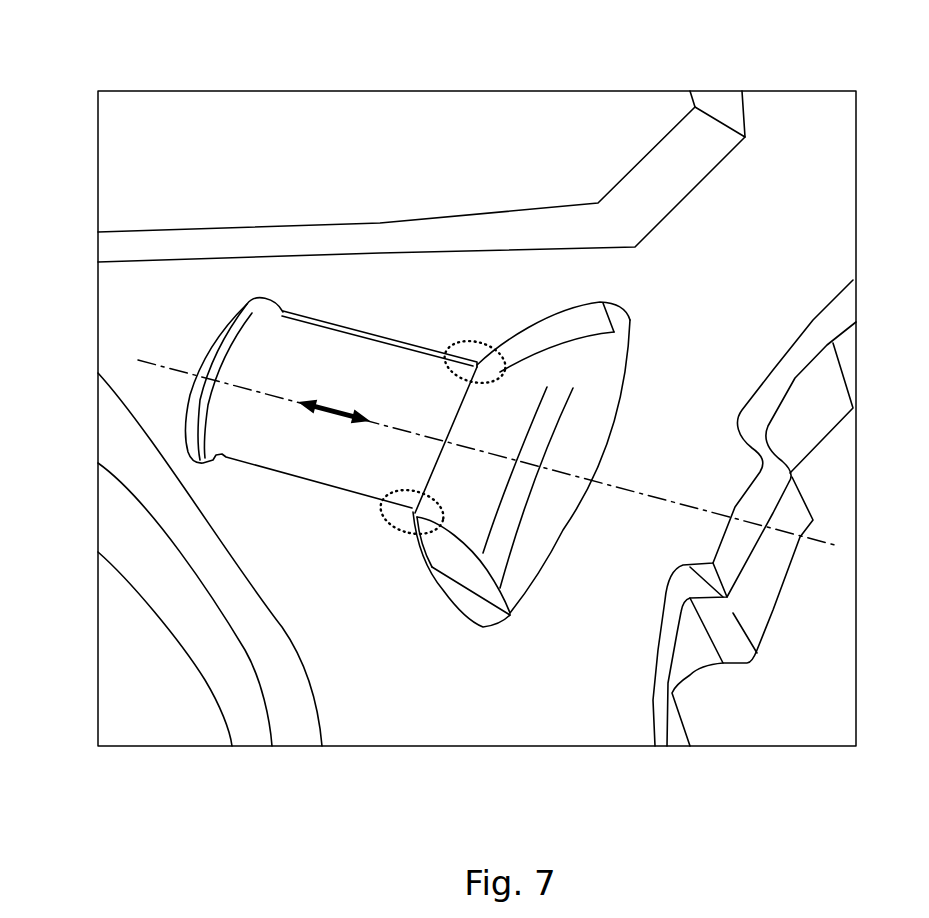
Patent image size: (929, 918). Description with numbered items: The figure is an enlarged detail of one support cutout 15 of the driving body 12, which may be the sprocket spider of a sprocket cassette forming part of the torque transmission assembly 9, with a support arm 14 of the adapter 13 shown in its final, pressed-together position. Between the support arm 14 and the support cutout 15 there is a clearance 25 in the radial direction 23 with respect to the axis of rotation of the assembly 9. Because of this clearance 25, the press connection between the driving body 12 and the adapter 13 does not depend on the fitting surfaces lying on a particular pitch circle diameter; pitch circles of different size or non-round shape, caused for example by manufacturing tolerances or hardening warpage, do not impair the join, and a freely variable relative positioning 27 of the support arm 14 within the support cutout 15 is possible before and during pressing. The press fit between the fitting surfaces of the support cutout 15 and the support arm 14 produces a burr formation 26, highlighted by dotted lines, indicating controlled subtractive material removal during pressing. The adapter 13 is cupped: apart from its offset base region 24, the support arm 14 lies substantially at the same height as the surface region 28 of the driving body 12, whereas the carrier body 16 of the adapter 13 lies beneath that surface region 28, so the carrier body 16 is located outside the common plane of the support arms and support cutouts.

The torque transmission assembly 9 is at (323, 148).
The driving body 12 is at (787, 148).
The adapter 13 is at (796, 621).
The support arm 14 is at (264, 366).
The support cutout 15 is at (574, 334).
The carrier body 16 is at (820, 417).
The radial direction 23 is at (635, 490).
The base region 24 is at (478, 572).
The clearance 25 is at (248, 292).
The burr formation 26 is at (466, 343).
The relative positioning 27 is at (334, 397).
The surface region 28 is at (768, 266).